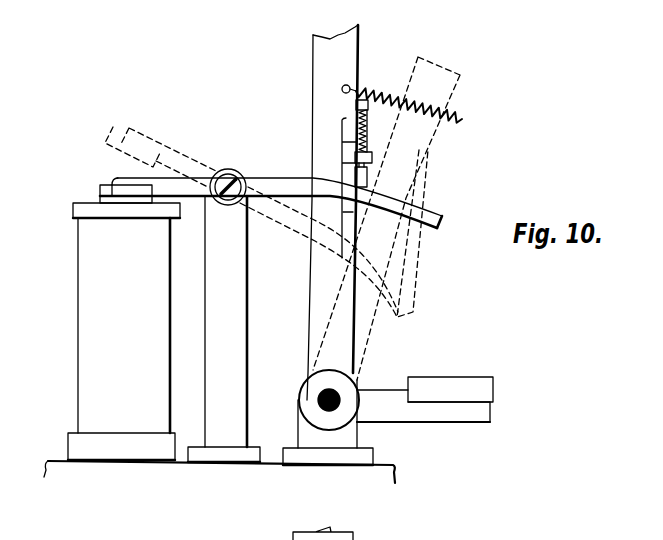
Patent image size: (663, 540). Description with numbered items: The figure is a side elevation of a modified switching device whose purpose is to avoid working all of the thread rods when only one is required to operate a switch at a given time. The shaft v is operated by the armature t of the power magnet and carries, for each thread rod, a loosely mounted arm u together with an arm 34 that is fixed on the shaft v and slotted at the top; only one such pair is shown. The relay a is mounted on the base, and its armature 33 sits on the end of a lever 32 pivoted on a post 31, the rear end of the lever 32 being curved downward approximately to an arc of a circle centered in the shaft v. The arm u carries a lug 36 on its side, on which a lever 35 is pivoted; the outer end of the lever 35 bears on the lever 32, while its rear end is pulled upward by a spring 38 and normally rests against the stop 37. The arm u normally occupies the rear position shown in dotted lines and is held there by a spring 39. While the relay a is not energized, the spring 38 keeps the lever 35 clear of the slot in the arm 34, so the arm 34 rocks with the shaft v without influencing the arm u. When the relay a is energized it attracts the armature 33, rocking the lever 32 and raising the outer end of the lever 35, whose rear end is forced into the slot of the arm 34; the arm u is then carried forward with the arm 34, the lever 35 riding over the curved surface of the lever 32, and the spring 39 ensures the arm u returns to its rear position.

The relay a is at (103, 332).
The post 31 is at (213, 360).
The lever 32 is at (193, 184).
The armature 33 is at (108, 192).
The arm 34 is at (362, 218).
The lever 35 is at (367, 178).
The lug 36 is at (292, 217).
The stop 37 is at (372, 158).
The spring 38 is at (367, 137).
The spring 39 is at (462, 118).
The arm u is at (343, 307).
The armature t is at (460, 384).
The shaft v is at (329, 408).